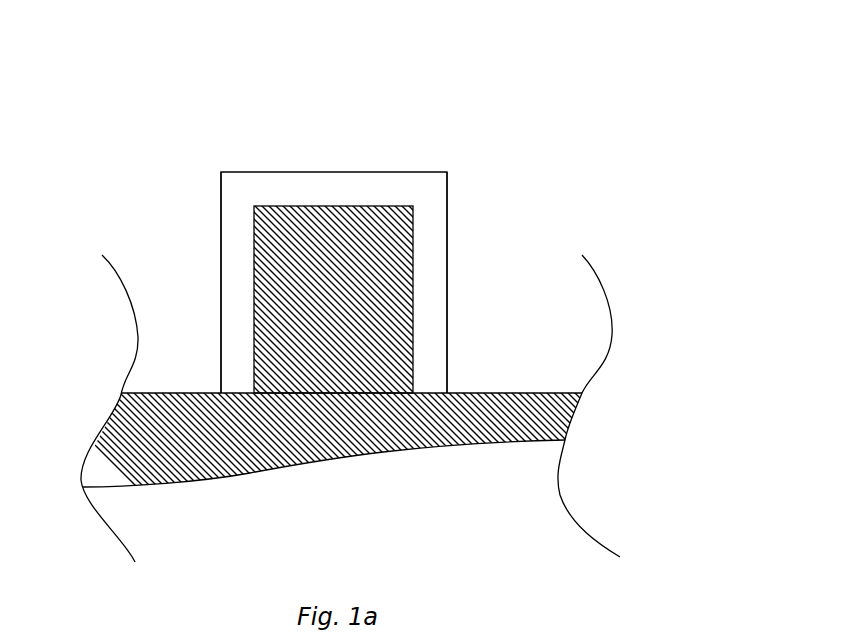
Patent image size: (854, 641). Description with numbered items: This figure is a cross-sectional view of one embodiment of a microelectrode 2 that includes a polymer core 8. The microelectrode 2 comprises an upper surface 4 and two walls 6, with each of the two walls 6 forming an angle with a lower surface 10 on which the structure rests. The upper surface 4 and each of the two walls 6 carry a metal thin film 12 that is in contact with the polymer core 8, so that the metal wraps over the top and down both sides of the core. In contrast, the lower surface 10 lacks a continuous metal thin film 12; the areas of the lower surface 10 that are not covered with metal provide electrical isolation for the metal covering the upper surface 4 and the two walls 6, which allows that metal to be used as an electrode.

The microelectrode 2 is at (393, 135).
The upper surface 4 is at (335, 172).
The walls 6 is at (222, 298).
The polymer core 8 is at (328, 328).
The lower surface 10 is at (502, 392).
The metal thin film 12 is at (242, 206).